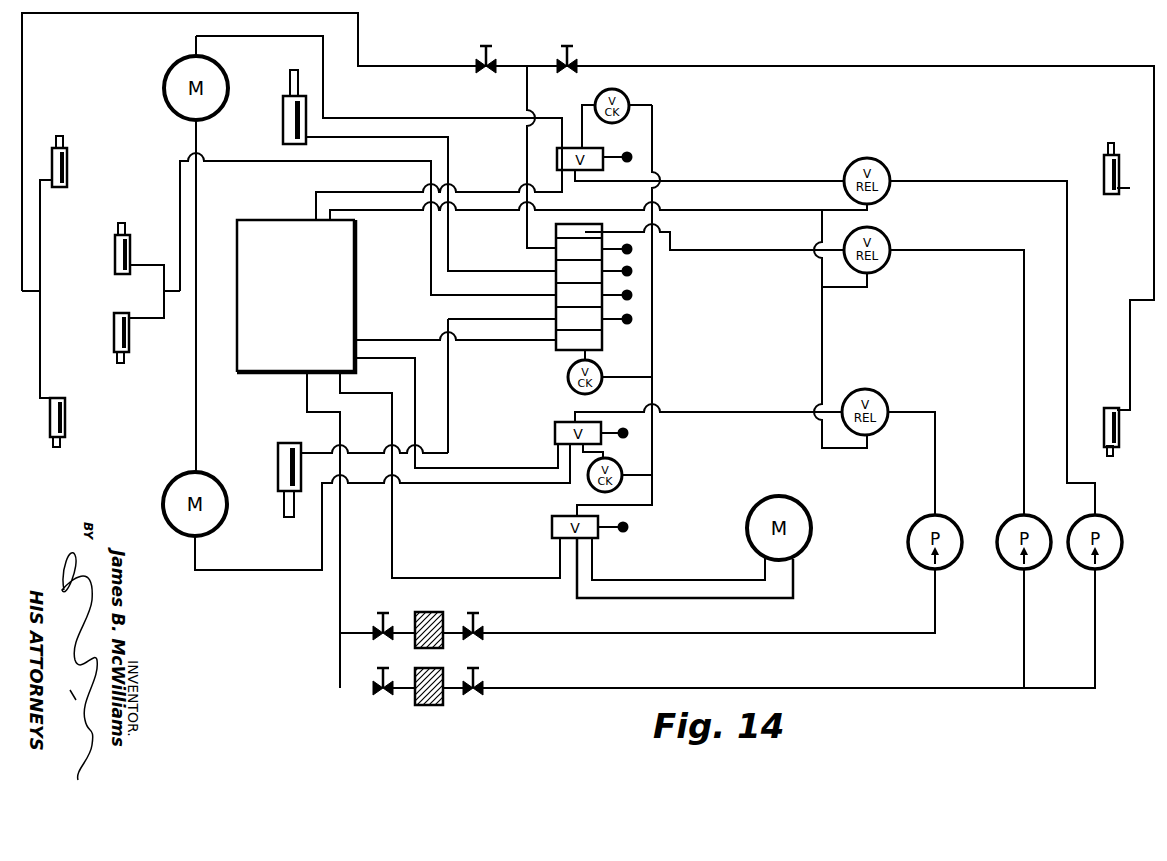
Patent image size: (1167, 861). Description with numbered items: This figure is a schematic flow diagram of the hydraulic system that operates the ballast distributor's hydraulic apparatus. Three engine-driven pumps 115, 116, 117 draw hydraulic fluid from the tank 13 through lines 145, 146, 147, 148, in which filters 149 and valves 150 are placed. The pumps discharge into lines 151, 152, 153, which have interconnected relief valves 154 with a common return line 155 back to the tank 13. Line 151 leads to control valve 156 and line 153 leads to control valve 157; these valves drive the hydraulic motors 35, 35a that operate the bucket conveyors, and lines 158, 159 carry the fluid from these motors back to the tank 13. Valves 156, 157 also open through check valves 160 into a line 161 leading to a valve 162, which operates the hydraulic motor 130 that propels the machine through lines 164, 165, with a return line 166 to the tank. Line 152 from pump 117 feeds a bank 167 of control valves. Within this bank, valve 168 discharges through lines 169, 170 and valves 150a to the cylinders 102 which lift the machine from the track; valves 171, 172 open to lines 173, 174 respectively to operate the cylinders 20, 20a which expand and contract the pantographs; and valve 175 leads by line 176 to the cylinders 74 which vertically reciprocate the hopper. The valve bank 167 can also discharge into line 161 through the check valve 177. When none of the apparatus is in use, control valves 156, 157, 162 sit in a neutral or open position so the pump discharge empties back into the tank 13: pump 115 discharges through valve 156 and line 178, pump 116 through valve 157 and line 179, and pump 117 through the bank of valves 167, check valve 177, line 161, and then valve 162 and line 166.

The tank 13 is at (298, 216).
The cylinder 20 is at (278, 453).
The cylinder 20a is at (283, 115).
The hydraulic motor 35 is at (167, 478).
The hydraulic motor 35a is at (164, 96).
The cylinders 74 is at (117, 313).
The cylinders 102 is at (67, 167).
The pump 115 is at (908, 542).
The pump 116 is at (1122, 542).
The pump 117 is at (1012, 570).
The hydraulic motor 130 is at (747, 530).
The line 145 is at (341, 607).
The line 146 is at (622, 633).
The line 147 is at (636, 687).
The line 148 is at (1025, 622).
The filter 149 is at (425, 612).
The valve 150 is at (381, 668).
The valve 150a is at (559, 50).
The line 151 is at (934, 452).
The line 152 is at (1025, 403).
The line 153 is at (1066, 270).
The relief valve 154 is at (886, 198).
The return line 155 is at (762, 211).
The control valve 156 is at (555, 433).
The control valve 157 is at (556, 172).
The line 158 is at (198, 410).
The line 159 is at (210, 296).
The check valve 160 is at (632, 96).
The line 161 is at (653, 436).
The valve 162 is at (550, 527).
The line 164 is at (675, 578).
The line 165 is at (745, 601).
The return line 166 is at (443, 578).
The bank of control valves 167 is at (612, 340).
The valve 168 is at (557, 254).
The line 169 is at (414, 65).
The line 170 is at (777, 65).
The valve 171 is at (556, 277).
The valve 172 is at (556, 323).
The line 173 is at (449, 175).
The line 174 is at (449, 398).
The valve 175 is at (556, 297).
The line 176 is at (430, 185).
The check valve 177 is at (568, 375).
The line 178 is at (500, 467).
The line 179 is at (336, 191).